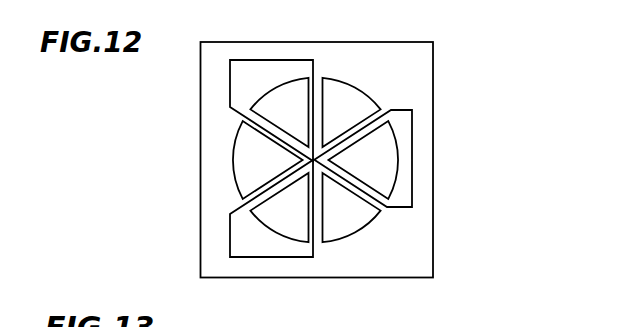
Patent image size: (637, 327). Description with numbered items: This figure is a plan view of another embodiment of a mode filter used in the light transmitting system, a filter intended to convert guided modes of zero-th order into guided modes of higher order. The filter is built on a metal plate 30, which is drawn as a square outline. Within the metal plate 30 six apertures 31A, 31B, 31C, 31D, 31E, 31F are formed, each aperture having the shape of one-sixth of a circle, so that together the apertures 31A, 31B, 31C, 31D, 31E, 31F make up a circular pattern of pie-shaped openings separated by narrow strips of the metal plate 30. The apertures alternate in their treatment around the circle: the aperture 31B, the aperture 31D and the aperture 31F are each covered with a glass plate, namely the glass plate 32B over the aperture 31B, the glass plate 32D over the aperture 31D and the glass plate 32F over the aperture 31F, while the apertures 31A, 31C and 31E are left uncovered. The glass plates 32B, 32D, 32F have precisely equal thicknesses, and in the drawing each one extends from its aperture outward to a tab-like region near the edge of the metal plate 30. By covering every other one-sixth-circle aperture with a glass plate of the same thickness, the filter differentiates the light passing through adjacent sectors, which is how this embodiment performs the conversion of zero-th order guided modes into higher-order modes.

The metal plate 30 is at (433, 148).
The aperture 31A is at (345, 93).
The aperture 31B is at (387, 177).
The aperture 31C is at (360, 215).
The aperture 31D is at (285, 228).
The aperture 31E is at (238, 175).
The aperture 31F is at (288, 92).
The glass plate 32B is at (413, 112).
The glass plate 32D is at (230, 236).
The glass plate 32F is at (230, 72).